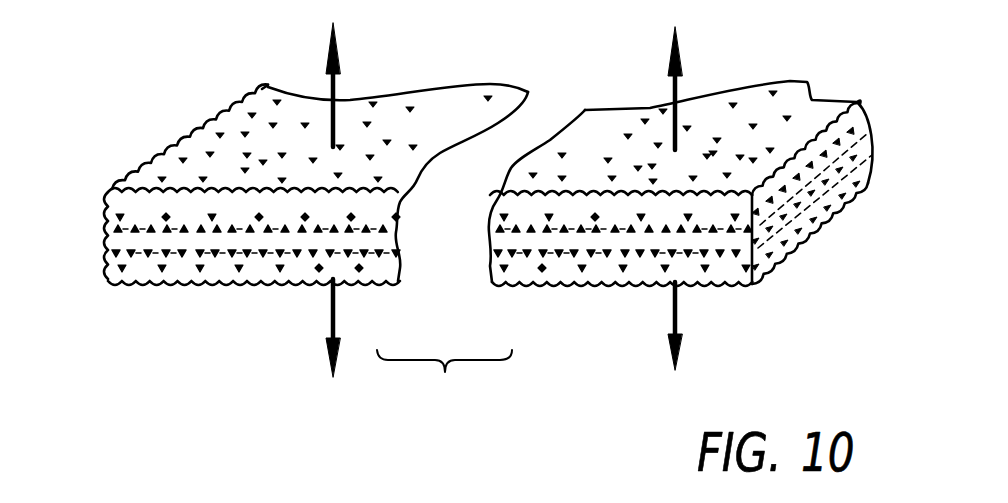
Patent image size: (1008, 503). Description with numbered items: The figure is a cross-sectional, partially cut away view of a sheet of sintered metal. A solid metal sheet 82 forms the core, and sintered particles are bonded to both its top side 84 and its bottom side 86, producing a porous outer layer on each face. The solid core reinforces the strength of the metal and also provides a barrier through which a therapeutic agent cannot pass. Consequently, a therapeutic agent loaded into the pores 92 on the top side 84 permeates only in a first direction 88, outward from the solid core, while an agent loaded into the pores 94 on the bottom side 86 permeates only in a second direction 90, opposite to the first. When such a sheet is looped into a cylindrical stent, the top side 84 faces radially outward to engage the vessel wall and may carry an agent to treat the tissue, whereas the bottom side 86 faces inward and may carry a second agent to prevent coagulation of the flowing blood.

The metal sheet 82 is at (107, 233).
The top side 84 is at (115, 188).
The bottom side 86 is at (107, 270).
The first direction 88 is at (337, 80).
The second direction 90 is at (328, 303).
The pores on the top side 92 is at (450, 125).
The pores on the bottom side 94 is at (200, 261).